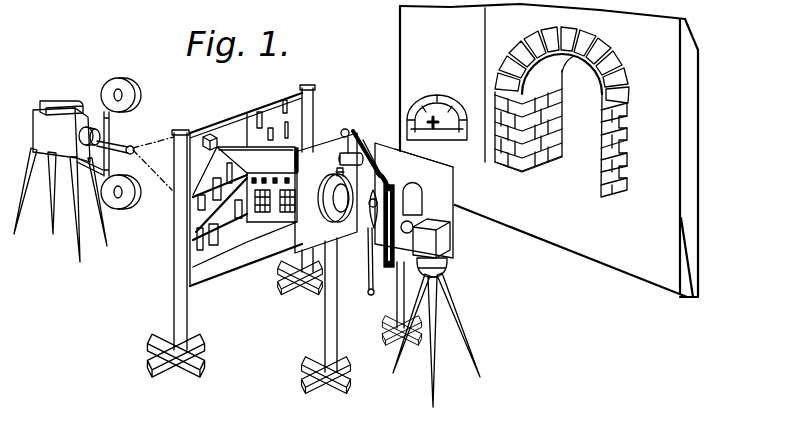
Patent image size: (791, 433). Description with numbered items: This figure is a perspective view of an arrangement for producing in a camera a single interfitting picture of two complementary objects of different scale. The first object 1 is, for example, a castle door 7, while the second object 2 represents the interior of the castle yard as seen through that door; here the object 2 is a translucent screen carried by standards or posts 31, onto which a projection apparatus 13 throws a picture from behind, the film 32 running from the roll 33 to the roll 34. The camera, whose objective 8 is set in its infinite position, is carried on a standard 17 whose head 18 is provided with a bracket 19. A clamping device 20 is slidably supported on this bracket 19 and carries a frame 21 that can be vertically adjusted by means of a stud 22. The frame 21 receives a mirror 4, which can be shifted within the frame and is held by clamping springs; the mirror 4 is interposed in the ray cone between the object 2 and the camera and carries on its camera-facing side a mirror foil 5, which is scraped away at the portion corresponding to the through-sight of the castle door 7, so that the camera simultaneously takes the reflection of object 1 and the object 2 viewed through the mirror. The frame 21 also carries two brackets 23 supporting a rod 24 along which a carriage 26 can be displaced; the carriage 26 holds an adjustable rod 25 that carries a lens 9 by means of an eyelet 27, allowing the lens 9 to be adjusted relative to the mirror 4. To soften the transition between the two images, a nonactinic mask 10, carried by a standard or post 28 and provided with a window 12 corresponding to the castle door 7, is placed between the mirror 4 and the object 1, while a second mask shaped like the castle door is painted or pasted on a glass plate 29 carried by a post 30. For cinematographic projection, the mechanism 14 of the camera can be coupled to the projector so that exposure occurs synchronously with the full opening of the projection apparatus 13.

The object 1 is at (549, 150).
The object 2 is at (247, 112).
The mirror 4 is at (420, 200).
The mirror foil 5 is at (431, 238).
The castle door 7 is at (562, 112).
The objective 8 is at (412, 224).
The lens 9 is at (338, 198).
The nonactinic mask 10 is at (320, 145).
The window 12 is at (322, 205).
The projection apparatus 13 is at (94, 170).
The mechanism 14 is at (420, 197).
The standard 17 is at (456, 305).
The head 18 is at (447, 270).
The bracket 19 is at (389, 267).
The clamping device 20 is at (367, 246).
The frame 21 is at (368, 273).
The stud 22 is at (368, 293).
The brackets 23 is at (380, 172).
The rod 24 is at (345, 129).
The adjustable rod 25 is at (353, 131).
The carriage 26 is at (352, 172).
The eyelet 27 is at (337, 171).
The standard or post 28 is at (326, 349).
The glass plate 29 is at (440, 163).
The post 30 is at (402, 296).
The standards or posts 31 is at (188, 312).
The film 32 is at (112, 128).
The roll 33 is at (138, 96).
The roll 34 is at (137, 192).